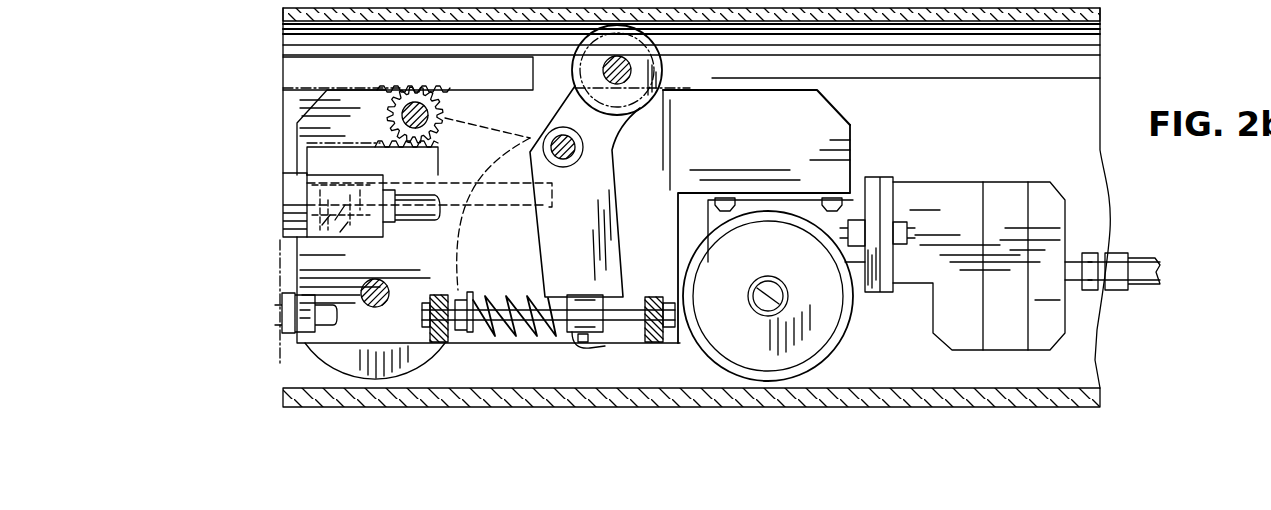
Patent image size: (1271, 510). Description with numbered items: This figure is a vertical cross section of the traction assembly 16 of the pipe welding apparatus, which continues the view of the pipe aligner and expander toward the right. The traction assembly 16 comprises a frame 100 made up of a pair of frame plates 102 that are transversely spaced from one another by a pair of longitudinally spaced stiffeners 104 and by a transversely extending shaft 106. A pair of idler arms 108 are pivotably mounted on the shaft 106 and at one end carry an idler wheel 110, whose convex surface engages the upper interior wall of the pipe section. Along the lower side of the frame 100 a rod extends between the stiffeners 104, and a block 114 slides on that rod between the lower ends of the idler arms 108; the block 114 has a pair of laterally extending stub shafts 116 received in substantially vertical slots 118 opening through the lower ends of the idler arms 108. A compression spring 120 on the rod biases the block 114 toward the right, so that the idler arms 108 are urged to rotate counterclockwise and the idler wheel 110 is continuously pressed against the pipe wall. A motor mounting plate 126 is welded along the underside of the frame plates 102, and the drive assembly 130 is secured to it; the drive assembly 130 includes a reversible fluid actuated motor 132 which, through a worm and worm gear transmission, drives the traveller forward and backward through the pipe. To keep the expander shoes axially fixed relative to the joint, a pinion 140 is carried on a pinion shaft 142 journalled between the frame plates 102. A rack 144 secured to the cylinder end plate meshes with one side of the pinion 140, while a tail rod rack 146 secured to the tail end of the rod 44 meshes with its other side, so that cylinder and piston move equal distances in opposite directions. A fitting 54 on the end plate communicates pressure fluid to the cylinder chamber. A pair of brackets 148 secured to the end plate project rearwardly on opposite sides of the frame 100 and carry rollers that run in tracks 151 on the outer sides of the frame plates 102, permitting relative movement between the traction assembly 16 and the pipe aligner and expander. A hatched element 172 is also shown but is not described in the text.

The traction assembly 16 is at (924, 142).
The rod 44 is at (415, 262).
The fitting 54 is at (282, 314).
The frame 100 is at (845, 118).
The frame plates 102 is at (853, 148).
The stiffeners 104 is at (448, 342).
The shaft 106 is at (563, 168).
The idler arms 108 is at (613, 170).
The idler wheel 110 is at (662, 65).
The block 114 is at (580, 297).
The stub shafts 116 is at (590, 348).
The slots 118 is at (584, 344).
The compression spring 120 is at (515, 298).
The motor mounting plate 126 is at (785, 197).
The drive assembly 130 is at (880, 308).
The reversible fluid actuated motor 132 is at (1008, 192).
The pinion 140 is at (443, 112).
The pinion shaft 142 is at (390, 116).
The rack 144 is at (452, 81).
The tail rod rack 146 is at (394, 170).
The brackets 148 is at (297, 121).
The tracks 151 is at (442, 212).
The hatched end nut 172 is at (645, 305).